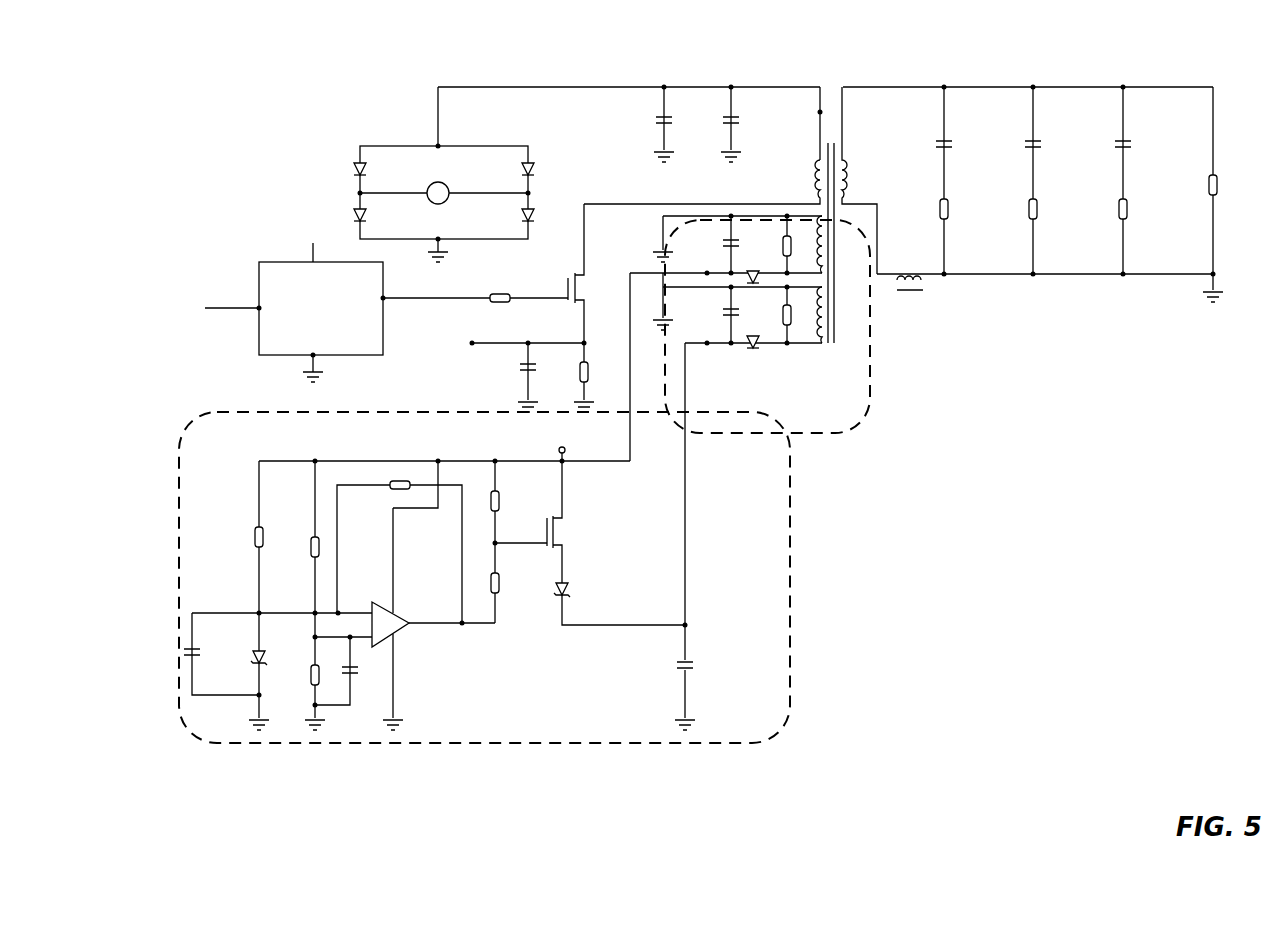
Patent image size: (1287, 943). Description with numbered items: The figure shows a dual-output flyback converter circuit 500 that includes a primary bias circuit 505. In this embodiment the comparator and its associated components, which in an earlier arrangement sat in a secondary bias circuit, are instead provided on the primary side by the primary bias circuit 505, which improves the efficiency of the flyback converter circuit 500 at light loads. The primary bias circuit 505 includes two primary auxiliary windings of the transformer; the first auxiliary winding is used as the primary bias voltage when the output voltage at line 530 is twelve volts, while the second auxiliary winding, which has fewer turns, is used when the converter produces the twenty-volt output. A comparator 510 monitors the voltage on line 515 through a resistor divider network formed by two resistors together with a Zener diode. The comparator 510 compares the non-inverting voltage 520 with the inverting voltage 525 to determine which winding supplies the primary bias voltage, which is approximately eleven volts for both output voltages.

The flyback converter circuit 500 is at (276, 114).
The primary bias circuit 505 is at (630, 750).
The comparator 510 is at (480, 648).
The line 515 is at (296, 455).
The non-inverting voltage 520 is at (360, 612).
The inverting voltage 525 is at (352, 631).
The line 530 is at (1188, 85).